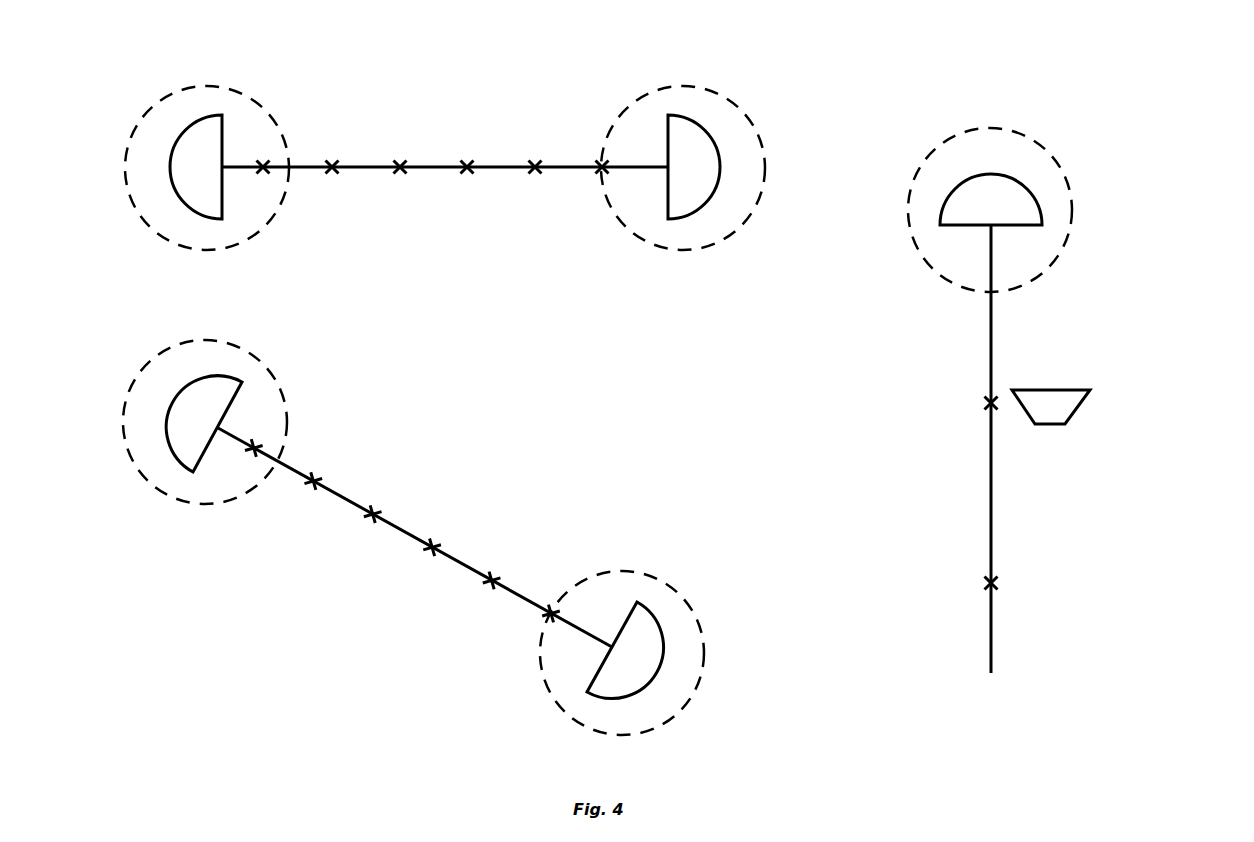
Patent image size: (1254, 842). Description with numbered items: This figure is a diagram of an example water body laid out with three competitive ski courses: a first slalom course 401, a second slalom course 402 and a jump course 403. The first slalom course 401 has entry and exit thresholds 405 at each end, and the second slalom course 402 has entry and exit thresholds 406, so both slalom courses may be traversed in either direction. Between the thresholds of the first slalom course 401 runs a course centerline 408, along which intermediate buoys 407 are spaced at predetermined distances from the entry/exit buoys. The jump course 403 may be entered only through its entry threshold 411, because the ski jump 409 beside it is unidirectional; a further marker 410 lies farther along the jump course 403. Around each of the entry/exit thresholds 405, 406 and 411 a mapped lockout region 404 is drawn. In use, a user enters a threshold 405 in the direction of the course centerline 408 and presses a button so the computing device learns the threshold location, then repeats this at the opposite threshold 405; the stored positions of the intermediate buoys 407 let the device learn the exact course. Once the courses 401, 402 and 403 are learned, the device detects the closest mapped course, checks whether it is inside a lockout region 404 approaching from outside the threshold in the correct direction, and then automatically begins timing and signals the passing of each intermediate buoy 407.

The first slalom course 401 is at (445, 121).
The second slalom course 402 is at (453, 493).
The jump course 403 is at (1113, 449).
The mapped lockout regions 404 is at (207, 85).
The entry and exit thresholds 405 is at (212, 181).
The entry and exit thresholds 406 is at (214, 422).
The intermediate buoys 407 is at (401, 172).
The course centerline 408 is at (432, 165).
The ski jump 409 is at (1070, 405).
The cable termination node 410 is at (1002, 583).
The entry threshold 411 is at (1008, 212).